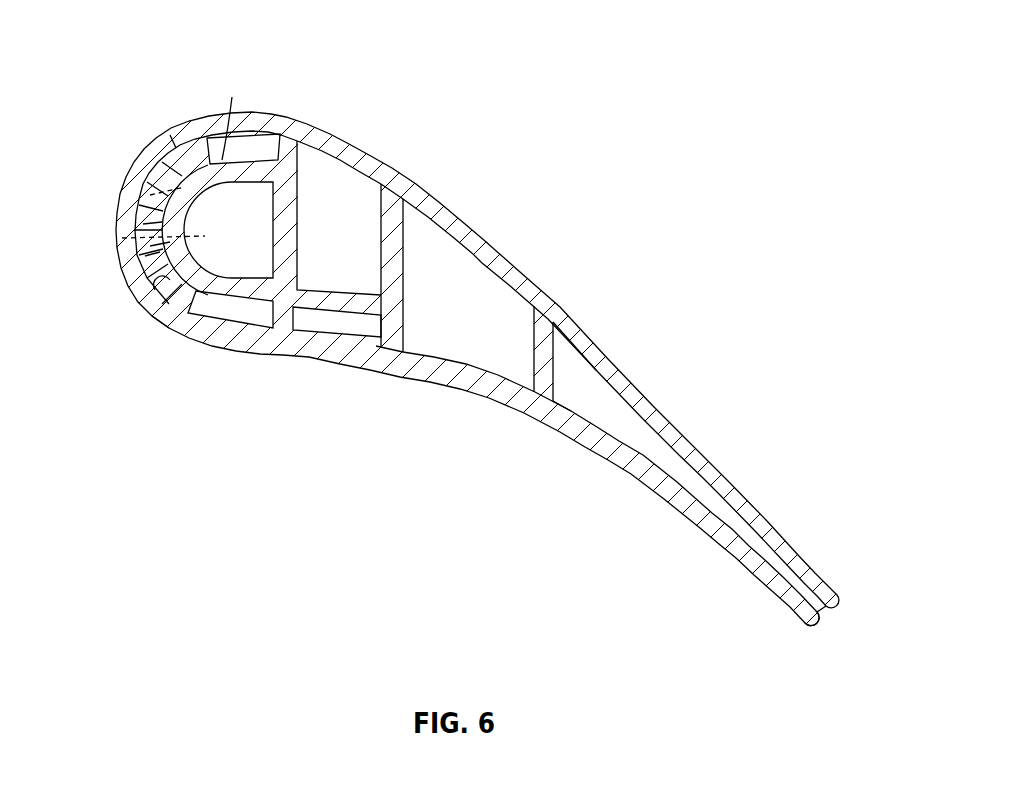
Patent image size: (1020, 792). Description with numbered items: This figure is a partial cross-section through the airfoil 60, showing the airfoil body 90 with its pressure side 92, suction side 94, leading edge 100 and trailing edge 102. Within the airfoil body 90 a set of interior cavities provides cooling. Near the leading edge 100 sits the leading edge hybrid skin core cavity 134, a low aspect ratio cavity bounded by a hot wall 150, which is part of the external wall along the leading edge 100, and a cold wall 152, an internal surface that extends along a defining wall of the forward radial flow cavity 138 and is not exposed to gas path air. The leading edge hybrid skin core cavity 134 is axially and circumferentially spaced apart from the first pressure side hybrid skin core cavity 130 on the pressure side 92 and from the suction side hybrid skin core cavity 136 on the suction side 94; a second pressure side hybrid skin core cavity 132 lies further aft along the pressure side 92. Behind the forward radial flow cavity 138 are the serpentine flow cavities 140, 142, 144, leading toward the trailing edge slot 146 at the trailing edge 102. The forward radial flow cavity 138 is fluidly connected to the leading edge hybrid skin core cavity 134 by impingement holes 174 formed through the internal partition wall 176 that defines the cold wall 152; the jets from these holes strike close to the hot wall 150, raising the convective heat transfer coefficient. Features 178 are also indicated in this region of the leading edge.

The airfoil 60 is at (152, 47).
The airfoil body 90 is at (704, 365).
The pressure side 92 is at (523, 412).
The suction side 94 is at (482, 238).
The leading edge 100 is at (120, 201).
The trailing edge 102 is at (829, 608).
The first pressure side hybrid skin core cavity 130 is at (247, 314).
The second pressure side hybrid skin core cavity 132 is at (348, 323).
The leading edge hybrid skin core cavity 134 is at (166, 202).
The suction side hybrid skin core cavity 136 is at (292, 120).
The forward radial flow cavity 138 is at (266, 192).
The serpentine flow cavity 140 is at (338, 180).
The serpentine flow cavity 142 is at (490, 306).
The serpentine flow cavity 144 is at (585, 381).
The trailing edge slot 146 is at (833, 618).
The hot wall 150 is at (158, 312).
The cold wall 152 is at (150, 292).
The impingement holes 174 is at (157, 231).
The internal partition wall 176 is at (283, 82).
The cooling holes 178 is at (167, 124).